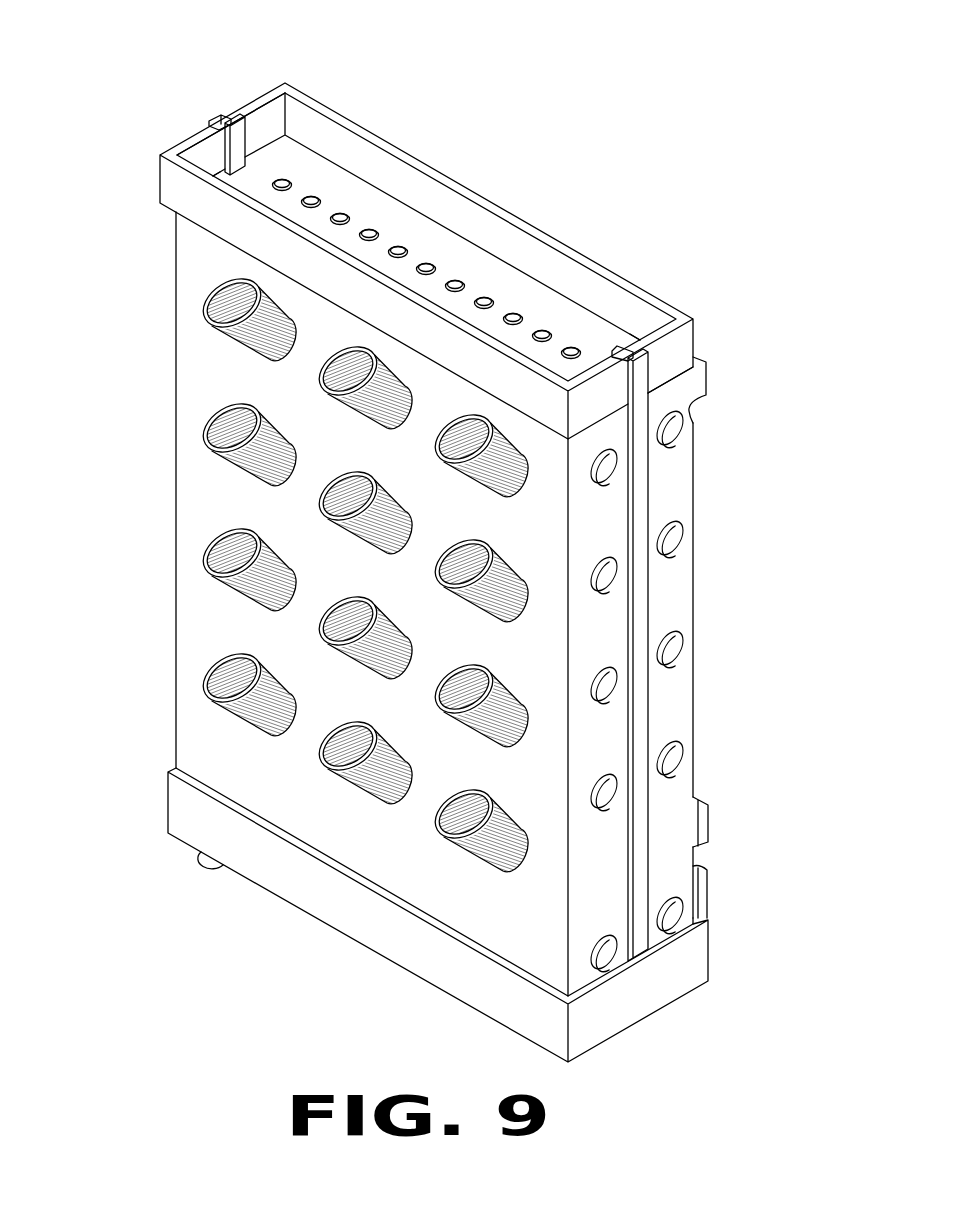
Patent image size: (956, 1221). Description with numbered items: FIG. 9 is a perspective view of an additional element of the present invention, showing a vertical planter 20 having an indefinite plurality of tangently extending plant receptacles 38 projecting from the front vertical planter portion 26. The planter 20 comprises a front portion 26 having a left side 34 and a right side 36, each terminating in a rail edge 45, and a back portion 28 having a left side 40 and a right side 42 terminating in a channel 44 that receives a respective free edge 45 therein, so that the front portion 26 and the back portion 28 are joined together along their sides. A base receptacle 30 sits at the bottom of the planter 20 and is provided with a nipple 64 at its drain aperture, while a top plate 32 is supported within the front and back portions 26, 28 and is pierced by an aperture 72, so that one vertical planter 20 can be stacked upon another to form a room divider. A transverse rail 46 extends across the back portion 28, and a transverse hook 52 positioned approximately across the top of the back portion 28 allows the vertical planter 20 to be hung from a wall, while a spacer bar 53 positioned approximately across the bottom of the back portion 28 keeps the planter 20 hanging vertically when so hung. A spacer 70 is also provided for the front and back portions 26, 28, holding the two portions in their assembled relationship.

The vertical planter 20 is at (428, 531).
The front portion 26 is at (175, 393).
The back portion 28 is at (527, 221).
The base receptacle 30 is at (320, 922).
The top plate 32 is at (418, 233).
The left side of front portion 34 is at (207, 155).
The right side of front portion 36 is at (590, 897).
The plant receptacle 38 is at (217, 673).
The left side of back portion 40 is at (668, 585).
The right side of back portion 42 is at (272, 114).
The channel 44 is at (247, 140).
The edge 45 is at (212, 118).
The transverse rail 46 is at (699, 893).
The transverse hook 52 is at (707, 382).
The spacer bar 53 is at (708, 813).
The nipple 64 is at (212, 860).
The spacer 70 is at (673, 645).
The aperture 72 is at (370, 233).